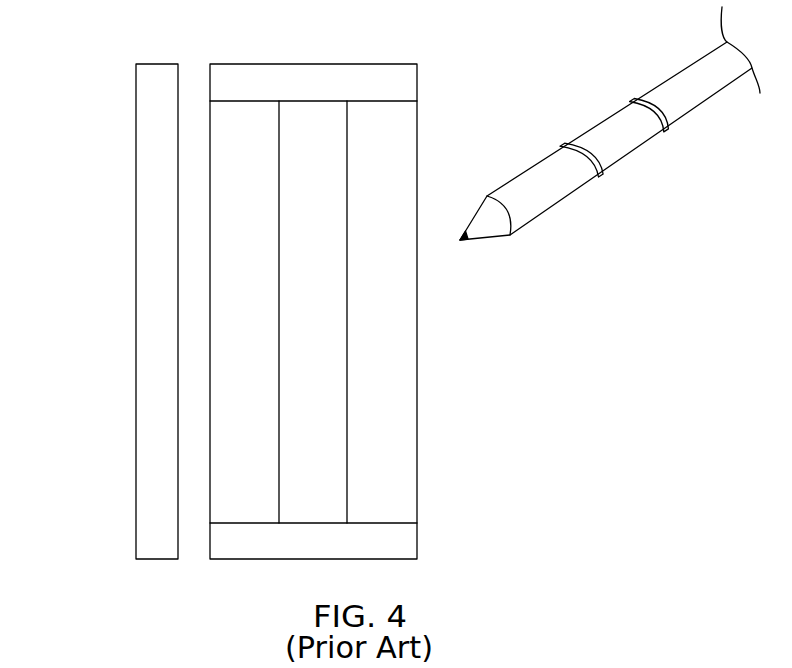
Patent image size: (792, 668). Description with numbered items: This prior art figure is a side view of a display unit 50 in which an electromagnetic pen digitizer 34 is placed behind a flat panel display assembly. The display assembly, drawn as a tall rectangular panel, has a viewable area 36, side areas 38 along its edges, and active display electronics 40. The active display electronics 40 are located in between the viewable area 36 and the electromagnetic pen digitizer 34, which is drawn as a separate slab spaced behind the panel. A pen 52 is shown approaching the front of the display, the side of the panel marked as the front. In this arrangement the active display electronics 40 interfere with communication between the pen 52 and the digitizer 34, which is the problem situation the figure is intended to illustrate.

The electromagnetic pen digitizer 34 is at (153, 158).
The viewable area 36 is at (398, 380).
The side areas 38 is at (402, 82).
The active display electronics 40 is at (313, 113).
The display unit 50 is at (110, 465).
The pen 52 is at (617, 143).